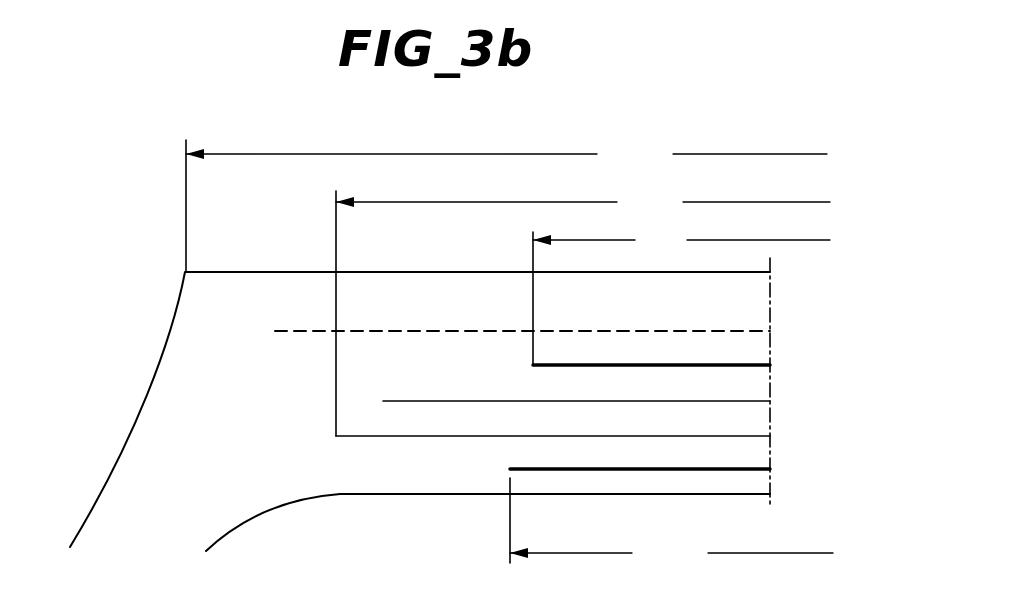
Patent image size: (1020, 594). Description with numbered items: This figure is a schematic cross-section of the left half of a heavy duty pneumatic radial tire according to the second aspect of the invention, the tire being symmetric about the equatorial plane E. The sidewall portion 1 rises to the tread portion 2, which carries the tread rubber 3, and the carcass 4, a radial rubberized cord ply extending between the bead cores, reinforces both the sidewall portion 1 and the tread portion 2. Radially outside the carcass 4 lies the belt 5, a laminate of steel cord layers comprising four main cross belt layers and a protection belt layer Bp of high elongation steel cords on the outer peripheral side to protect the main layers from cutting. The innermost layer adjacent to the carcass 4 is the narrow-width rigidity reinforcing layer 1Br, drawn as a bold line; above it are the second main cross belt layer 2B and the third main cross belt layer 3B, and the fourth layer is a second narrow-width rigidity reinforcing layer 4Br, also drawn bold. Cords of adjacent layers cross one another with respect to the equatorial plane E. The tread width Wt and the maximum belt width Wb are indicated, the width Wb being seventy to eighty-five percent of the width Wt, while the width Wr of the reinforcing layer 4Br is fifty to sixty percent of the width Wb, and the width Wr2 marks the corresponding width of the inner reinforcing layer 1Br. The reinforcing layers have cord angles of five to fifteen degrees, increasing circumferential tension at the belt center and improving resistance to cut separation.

The sidewall portion 1 is at (91, 503).
The tread portion 2 is at (239, 262).
The tread rubber 3 is at (294, 288).
The carcass 4 is at (293, 496).
The belt 5 is at (846, 320).
The narrow-width rigidity reinforcing layer adjacent to the carcass 1Br is at (669, 475).
The second main cross belt layer 2B is at (575, 439).
The third main cross belt layer 3B is at (598, 403).
The narrow-width rigidity reinforcing layer near the tread 4Br is at (681, 368).
The protection belt layer Bp is at (545, 335).
The equatorial plane E is at (772, 262).
The tread width Wt is at (506, 205).
The maximum width of the main cross belt layers Wb is at (583, 311).
The width of the narrow-width rigidity reinforcing layer Wr is at (681, 295).
The second reinforcing layer width Wr2 is at (671, 525).